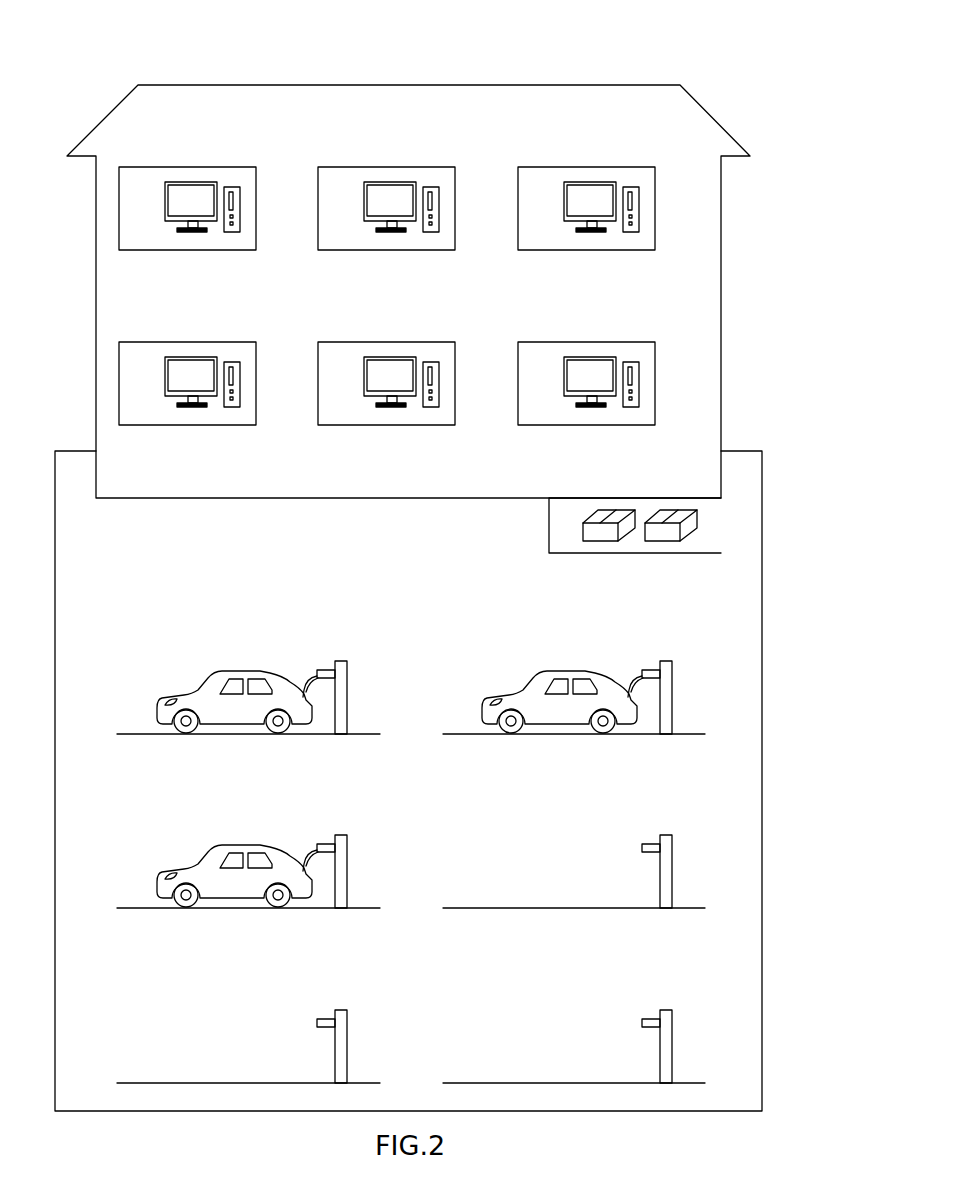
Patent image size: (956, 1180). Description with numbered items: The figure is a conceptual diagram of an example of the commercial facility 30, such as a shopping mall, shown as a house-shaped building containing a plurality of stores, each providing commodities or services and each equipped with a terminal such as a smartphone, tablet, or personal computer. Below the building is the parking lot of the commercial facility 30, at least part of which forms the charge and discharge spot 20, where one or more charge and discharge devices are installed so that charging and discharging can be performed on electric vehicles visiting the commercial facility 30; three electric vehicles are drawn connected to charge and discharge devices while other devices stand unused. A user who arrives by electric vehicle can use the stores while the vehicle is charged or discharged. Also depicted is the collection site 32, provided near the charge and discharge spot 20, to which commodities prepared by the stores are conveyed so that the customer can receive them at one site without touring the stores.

The charge and discharge spot 20 is at (395, 598).
The commercial facility 30 is at (343, 80).
The collection site 32 is at (708, 530).